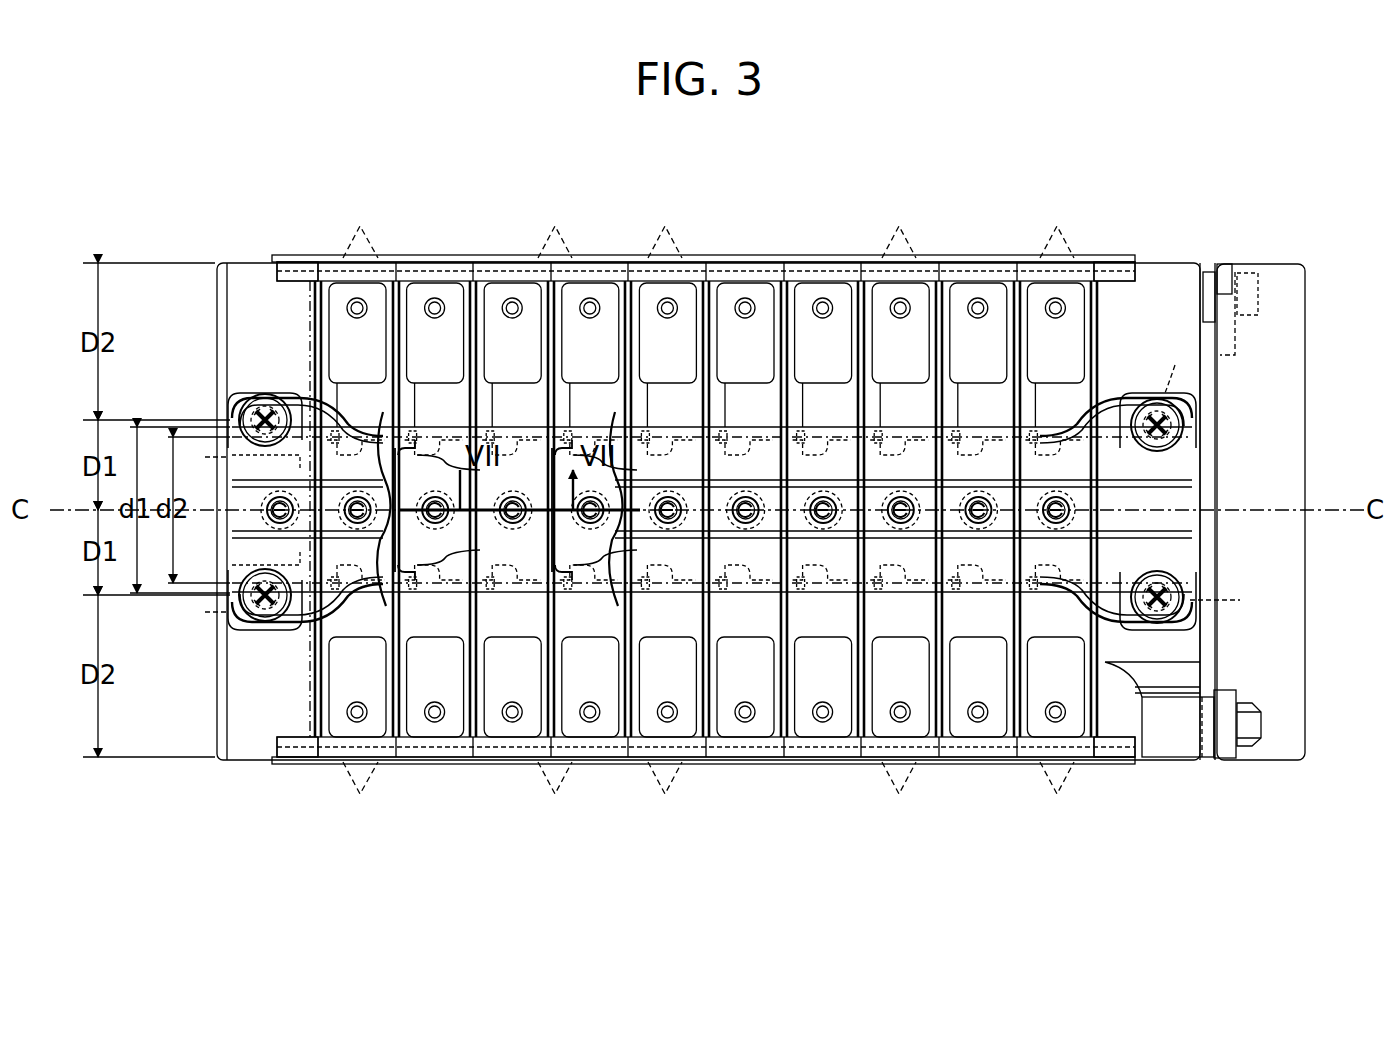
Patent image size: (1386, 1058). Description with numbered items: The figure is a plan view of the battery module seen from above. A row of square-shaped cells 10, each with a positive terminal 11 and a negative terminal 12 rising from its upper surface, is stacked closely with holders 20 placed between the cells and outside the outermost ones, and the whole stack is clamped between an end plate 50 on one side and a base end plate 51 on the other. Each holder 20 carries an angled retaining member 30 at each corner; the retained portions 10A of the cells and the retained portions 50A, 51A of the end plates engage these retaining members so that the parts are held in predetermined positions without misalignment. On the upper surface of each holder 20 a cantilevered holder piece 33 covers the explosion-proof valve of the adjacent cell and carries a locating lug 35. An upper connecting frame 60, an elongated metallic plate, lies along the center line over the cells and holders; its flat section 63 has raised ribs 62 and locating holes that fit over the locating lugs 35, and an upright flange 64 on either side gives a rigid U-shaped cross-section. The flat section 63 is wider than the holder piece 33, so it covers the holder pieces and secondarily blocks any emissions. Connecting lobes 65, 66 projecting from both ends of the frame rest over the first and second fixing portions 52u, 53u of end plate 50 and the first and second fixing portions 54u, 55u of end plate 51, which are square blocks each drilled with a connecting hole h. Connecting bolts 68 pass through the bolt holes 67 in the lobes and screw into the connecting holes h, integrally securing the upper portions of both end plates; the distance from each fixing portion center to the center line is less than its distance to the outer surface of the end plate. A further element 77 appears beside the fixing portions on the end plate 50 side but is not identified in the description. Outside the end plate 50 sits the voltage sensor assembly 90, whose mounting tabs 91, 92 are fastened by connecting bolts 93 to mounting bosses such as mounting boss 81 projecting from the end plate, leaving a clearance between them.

The cell 10 is at (415, 283).
The retained portion 10A is at (707, 511).
The positive terminal 11 is at (357, 703).
The negative terminal 12 is at (357, 318).
The holder 20 is at (325, 400).
The retaining member 30 is at (318, 258).
The holder piece 33 is at (545, 592).
The locating lug 35 is at (513, 497).
The end plate 50 is at (1185, 290).
The retained portion 50A is at (1120, 262).
The base end plate 51 is at (235, 300).
The retained portion 51A is at (290, 262).
The first fixing portion 52u is at (1192, 625).
The second fixing portion 53u is at (1190, 398).
The first fixing portion 54u is at (235, 630).
The second fixing portion 55u is at (240, 393).
The upper connecting frame 60 is at (1140, 380).
The rib 62 is at (1110, 660).
The flat section 63 is at (1180, 530).
The flange 64 is at (885, 445).
The connecting lobe 65 is at (1180, 475).
The connecting lobe 66 is at (240, 575).
The bolt hole 67 is at (298, 398).
The connecting bolt 68 is at (240, 410).
The right fixing screw 77 is at (1180, 435).
The mounting boss 81 is at (1172, 735).
The voltage sensor assembly 90 is at (1296, 328).
The mounting tab 91 is at (1228, 758).
The mounting tab 92 is at (1228, 275).
The connecting bolt 93 is at (1250, 316).
The connecting hole h is at (716, 483).